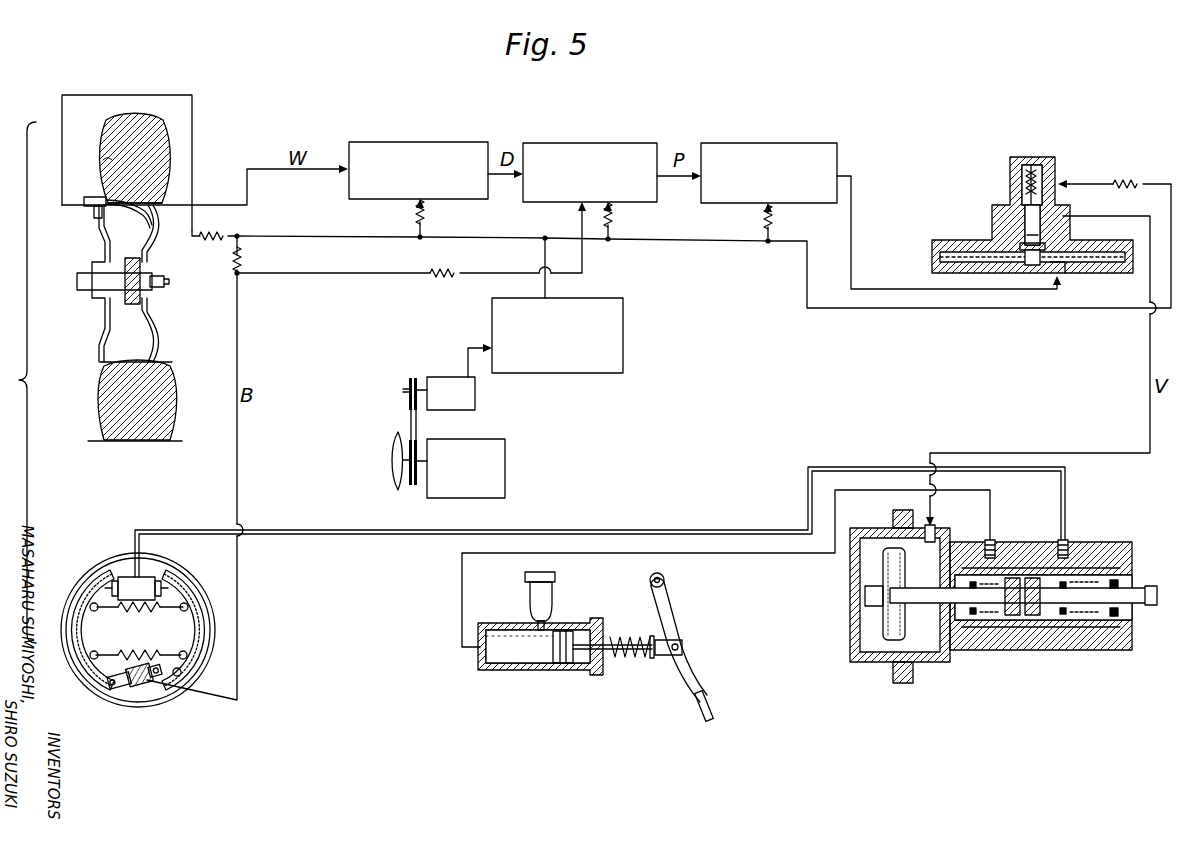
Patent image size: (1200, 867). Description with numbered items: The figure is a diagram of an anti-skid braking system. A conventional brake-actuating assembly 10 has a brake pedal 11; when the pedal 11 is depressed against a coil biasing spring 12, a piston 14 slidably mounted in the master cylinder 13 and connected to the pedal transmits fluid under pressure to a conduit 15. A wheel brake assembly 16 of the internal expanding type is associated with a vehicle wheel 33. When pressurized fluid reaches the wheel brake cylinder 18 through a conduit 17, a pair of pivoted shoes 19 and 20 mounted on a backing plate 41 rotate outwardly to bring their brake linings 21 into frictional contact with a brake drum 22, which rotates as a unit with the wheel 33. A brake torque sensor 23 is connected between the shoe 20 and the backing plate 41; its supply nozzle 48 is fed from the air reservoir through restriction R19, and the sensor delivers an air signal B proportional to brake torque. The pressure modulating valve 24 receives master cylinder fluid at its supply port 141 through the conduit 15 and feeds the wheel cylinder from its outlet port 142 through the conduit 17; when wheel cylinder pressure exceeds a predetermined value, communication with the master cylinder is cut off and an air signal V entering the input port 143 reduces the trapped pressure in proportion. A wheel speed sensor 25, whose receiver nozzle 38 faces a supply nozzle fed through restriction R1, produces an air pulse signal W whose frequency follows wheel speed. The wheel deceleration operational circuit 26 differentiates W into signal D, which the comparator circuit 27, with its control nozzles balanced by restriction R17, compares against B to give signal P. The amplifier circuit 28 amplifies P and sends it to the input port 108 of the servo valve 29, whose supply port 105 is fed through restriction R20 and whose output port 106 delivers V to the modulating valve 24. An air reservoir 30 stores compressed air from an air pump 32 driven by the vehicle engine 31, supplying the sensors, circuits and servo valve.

The vehicle wheel 33 is at (104, 170).
The wheel speed sensor 25 is at (82, 222).
The receiver nozzle 38 is at (128, 208).
The backing plate 41 is at (101, 328).
The restriction R1 is at (224, 229).
The restriction R19 is at (240, 263).
The restriction R17 is at (456, 277).
The restriction R20 is at (1134, 182).
The wheel deceleration operational circuit 26 is at (421, 142).
The comparator circuit 27 is at (590, 171).
The amplifier circuit 28 is at (776, 143).
The servo valve 29 is at (1032, 206).
The supply port 105 is at (1060, 182).
The output port 106 is at (1080, 233).
The input port 108 is at (1032, 278).
The air reservoir 30 is at (626, 325).
The air pump 32 is at (477, 392).
The vehicle engine 31 is at (505, 455).
The conduit 17 is at (345, 529).
The conduit 15 is at (759, 557).
The master cylinder 13 is at (497, 672).
The brake-actuating assembly 10 is at (553, 672).
The piston 14 is at (575, 672).
The coil biasing spring 12 is at (636, 680).
The brake pedal 11 is at (712, 701).
The pressure modulating valve 24 is at (1003, 607).
The input port 143 is at (936, 526).
The supply port 141 is at (994, 541).
The outlet port 142 is at (1070, 542).
The wheel brake assembly 16 is at (144, 642).
The wheel brake cylinder 18 is at (128, 552).
The shoe 19 is at (203, 600).
The shoe 20 is at (90, 588).
The brake drum 22 is at (99, 565).
The brake lining 21 is at (193, 673).
The brake torque sensor 23 is at (125, 690).
The supply nozzle 48 is at (150, 682).